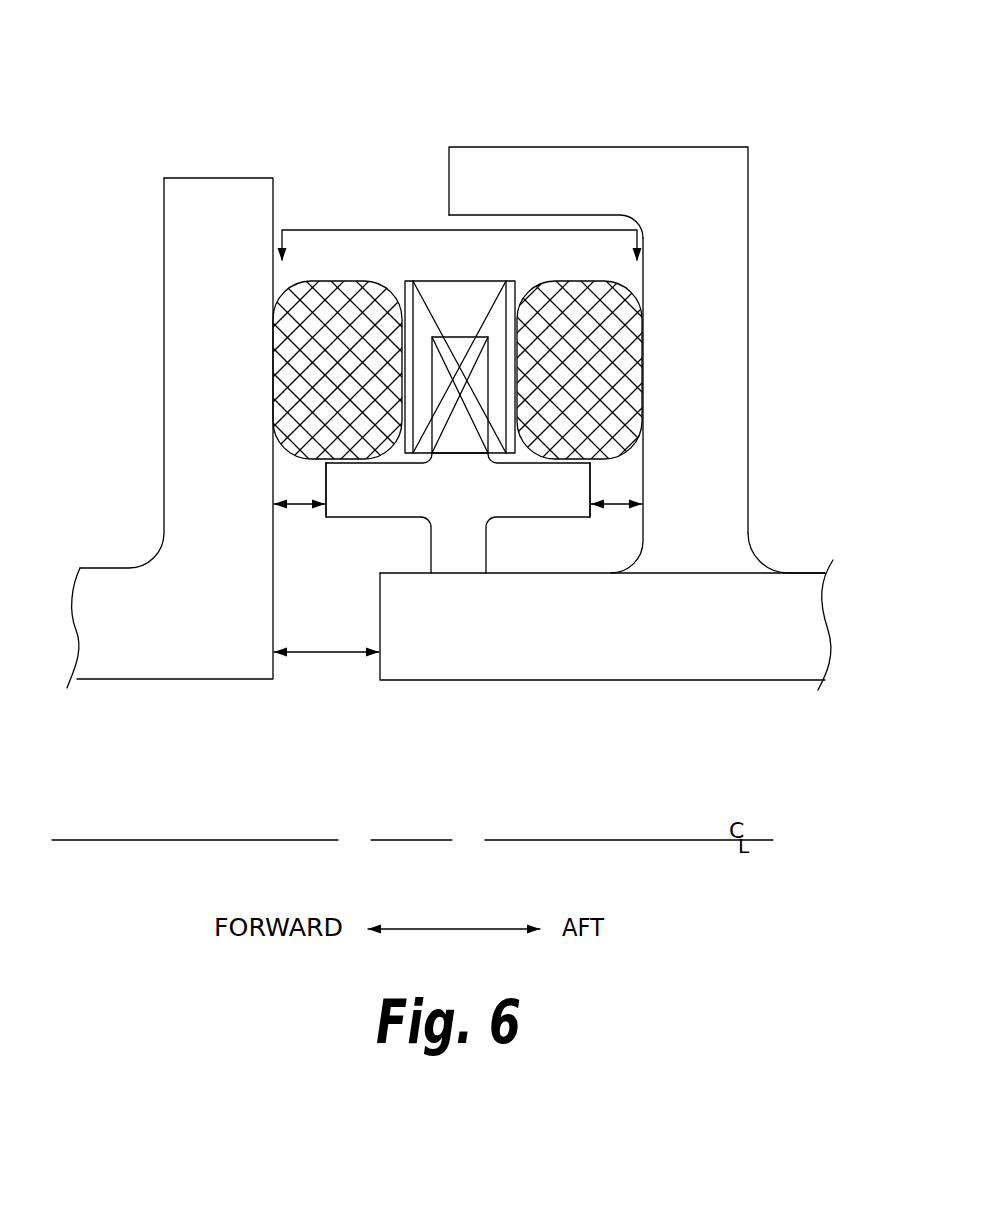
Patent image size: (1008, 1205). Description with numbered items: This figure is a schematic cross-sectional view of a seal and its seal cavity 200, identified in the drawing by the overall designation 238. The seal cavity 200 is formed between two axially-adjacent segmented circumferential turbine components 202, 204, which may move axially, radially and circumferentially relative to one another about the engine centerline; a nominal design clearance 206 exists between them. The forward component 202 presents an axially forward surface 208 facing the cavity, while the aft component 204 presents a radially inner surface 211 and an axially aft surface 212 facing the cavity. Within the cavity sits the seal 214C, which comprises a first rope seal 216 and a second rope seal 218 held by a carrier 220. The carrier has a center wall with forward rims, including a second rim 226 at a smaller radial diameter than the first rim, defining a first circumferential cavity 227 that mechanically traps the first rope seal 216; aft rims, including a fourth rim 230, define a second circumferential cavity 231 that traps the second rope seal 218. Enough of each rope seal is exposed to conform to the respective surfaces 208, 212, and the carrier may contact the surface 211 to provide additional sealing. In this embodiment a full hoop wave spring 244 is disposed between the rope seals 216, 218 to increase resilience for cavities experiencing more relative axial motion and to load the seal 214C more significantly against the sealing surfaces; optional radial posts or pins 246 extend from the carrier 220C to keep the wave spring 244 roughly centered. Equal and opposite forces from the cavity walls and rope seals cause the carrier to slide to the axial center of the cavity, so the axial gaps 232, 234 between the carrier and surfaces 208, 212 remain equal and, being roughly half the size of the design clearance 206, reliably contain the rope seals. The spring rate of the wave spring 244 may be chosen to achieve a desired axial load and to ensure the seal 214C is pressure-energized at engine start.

The turbine assembly 238 is at (352, 28).
The seal cavity 200 is at (625, 324).
The full hoop wave spring 244 is at (482, 281).
The axially aft surface 212 is at (642, 276).
The axially forward surface 208 is at (274, 195).
The turbine component 202 is at (140, 679).
The turbine component 204 is at (490, 680).
The radially inner surface 211 is at (543, 570).
The seal 214C is at (370, 216).
The first circumferential cavity 227 is at (396, 462).
The second circumferential cavity 231 is at (522, 462).
The first rope seal 216 is at (325, 343).
The second rope seal 218 is at (600, 338).
The carrier 220 is at (462, 247).
The radial posts or pins 246 is at (458, 436).
The second rim 226 is at (360, 498).
The axial gap 232 is at (300, 507).
The fourth rim 230 is at (570, 493).
The axial gap 234 is at (618, 519).
The nominal design clearance 206 is at (323, 652).
The carrier 220C is at (583, 531).